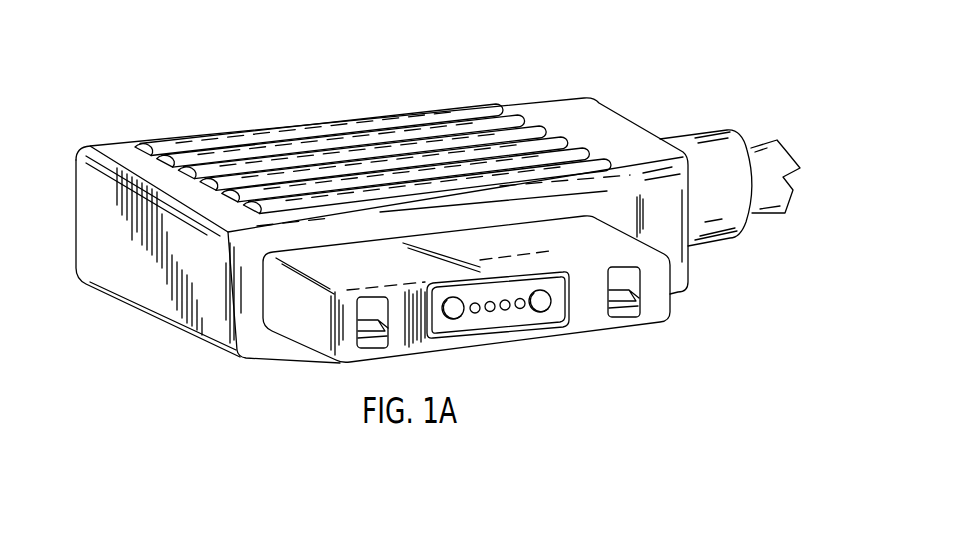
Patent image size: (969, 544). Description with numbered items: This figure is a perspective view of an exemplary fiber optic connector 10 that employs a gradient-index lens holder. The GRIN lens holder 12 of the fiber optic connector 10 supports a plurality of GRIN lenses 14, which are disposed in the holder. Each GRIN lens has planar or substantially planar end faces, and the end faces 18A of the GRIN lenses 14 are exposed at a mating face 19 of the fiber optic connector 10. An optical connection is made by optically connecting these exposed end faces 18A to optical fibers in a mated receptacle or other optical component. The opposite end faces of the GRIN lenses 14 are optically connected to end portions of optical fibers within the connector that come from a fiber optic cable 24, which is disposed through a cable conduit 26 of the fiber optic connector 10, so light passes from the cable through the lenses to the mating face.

The fiber optic connector 10 is at (283, 75).
The GRIN lens holder 12 is at (527, 290).
The GRIN lenses 14 is at (522, 314).
The end faces 18A is at (475, 302).
The mating face 19 is at (558, 313).
The fiber optic cable 24 is at (775, 156).
The cable conduit 26 is at (698, 137).